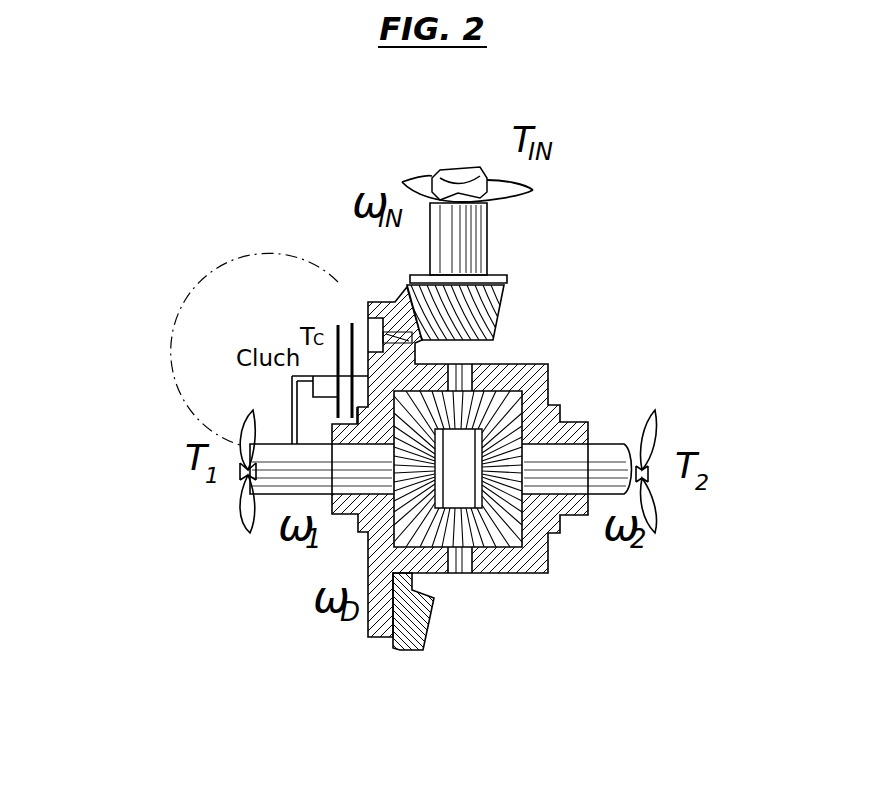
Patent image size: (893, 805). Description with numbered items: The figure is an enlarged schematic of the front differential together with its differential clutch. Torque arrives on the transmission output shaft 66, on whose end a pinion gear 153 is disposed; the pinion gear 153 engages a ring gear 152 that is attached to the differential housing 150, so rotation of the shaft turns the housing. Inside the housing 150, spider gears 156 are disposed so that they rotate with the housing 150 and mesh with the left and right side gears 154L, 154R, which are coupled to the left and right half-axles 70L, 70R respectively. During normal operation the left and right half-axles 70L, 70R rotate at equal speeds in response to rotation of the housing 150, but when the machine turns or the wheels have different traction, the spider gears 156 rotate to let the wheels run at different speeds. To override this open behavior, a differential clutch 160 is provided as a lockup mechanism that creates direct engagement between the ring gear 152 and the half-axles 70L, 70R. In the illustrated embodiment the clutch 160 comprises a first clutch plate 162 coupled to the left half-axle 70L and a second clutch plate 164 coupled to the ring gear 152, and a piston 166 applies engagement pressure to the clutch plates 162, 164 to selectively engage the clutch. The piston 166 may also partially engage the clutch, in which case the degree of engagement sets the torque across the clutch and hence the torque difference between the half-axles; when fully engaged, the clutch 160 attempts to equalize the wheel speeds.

The transmission output shaft 66 is at (473, 237).
The left half-axle 70L is at (264, 500).
The right half-axle 70R is at (608, 460).
The housing 150 is at (540, 368).
The ring gear 152 is at (418, 635).
The pinion gear 153 is at (503, 300).
The left side gear 154L is at (398, 478).
The right side gear 154R is at (507, 493).
The spider gears 156 is at (480, 397).
The differential clutch 160 is at (300, 285).
The first clutch plate 162 is at (337, 357).
The second clutch plate 164 is at (352, 335).
The piston 166 is at (325, 387).